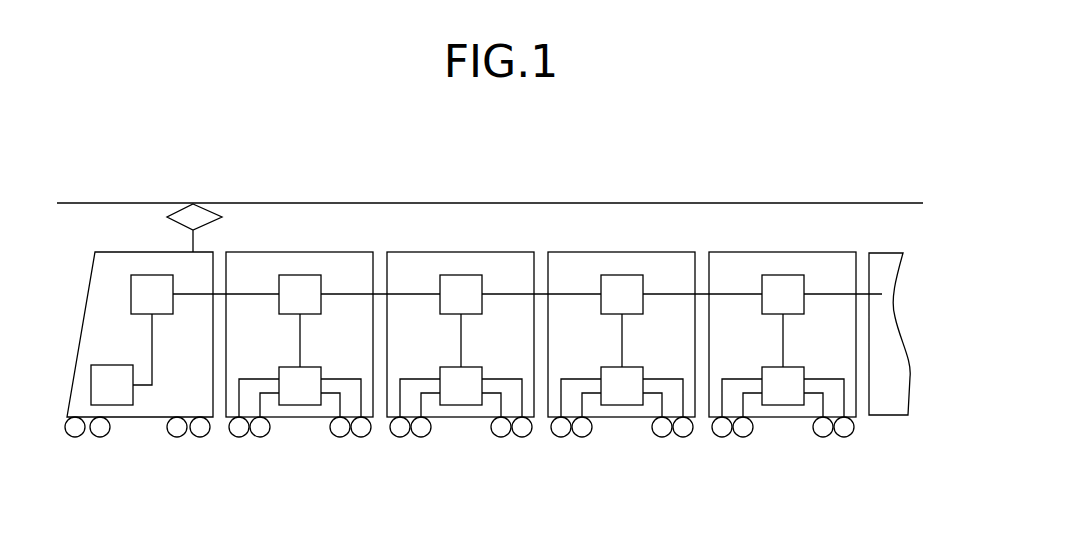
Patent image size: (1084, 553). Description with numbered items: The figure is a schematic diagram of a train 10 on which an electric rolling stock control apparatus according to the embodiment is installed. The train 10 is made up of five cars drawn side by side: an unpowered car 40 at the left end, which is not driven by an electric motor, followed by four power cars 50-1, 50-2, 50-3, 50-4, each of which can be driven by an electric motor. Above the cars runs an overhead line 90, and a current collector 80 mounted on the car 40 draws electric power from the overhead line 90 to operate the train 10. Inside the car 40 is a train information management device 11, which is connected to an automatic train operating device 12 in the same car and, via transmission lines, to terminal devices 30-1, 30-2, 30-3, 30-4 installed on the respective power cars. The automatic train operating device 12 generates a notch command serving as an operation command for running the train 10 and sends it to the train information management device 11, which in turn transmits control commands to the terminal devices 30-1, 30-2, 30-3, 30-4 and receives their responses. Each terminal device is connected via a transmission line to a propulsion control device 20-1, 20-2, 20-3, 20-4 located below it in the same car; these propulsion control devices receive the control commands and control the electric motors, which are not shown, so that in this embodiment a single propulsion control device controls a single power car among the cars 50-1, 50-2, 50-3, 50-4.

The train 10 is at (957, 136).
The train information management device 11 is at (155, 275).
The automatic train operating device 12 is at (112, 364).
The propulsion control device 20-1 is at (298, 410).
The propulsion control device 20-2 is at (459, 410).
The propulsion control device 20-3 is at (620, 410).
The propulsion control device 20-4 is at (781, 410).
The terminal device 30-1 is at (299, 274).
The terminal device 30-2 is at (460, 274).
The terminal device 30-3 is at (621, 274).
The terminal device 30-4 is at (782, 274).
The car 40 is at (90, 281).
The car 50-1 is at (353, 252).
The car 50-2 is at (514, 252).
The car 50-3 is at (675, 252).
The car 50-4 is at (836, 252).
The current collector 80 is at (222, 217).
The overhead line 90 is at (863, 203).